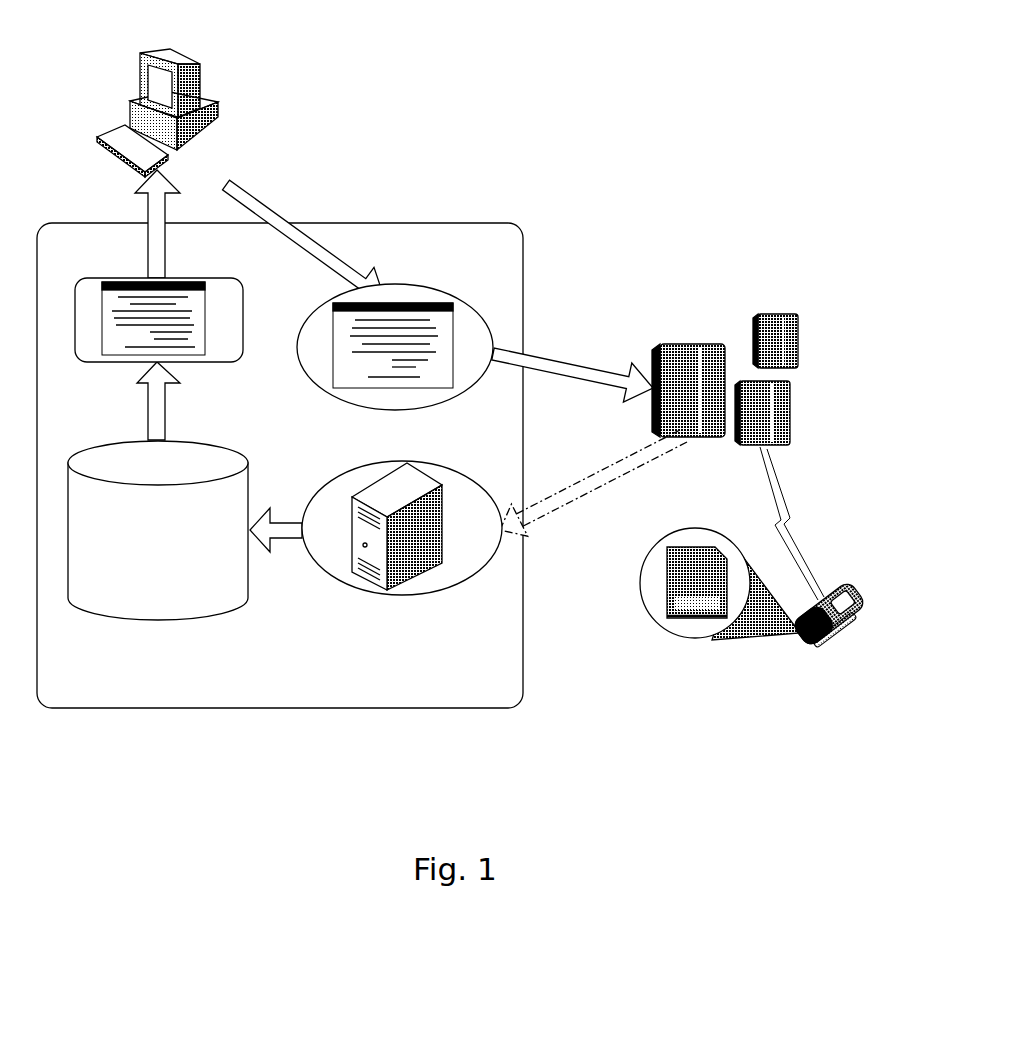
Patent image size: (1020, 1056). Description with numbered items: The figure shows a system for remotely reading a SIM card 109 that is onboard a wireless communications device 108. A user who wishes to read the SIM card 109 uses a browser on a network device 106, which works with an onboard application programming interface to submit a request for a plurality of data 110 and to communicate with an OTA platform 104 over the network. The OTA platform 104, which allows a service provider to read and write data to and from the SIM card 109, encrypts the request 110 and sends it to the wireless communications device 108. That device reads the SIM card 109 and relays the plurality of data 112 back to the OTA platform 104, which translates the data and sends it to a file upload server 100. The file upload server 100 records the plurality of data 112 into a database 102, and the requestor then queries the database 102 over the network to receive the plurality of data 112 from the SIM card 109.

The file upload server 100 is at (402, 551).
The database 102 is at (189, 560).
The OTA platform 104 is at (734, 361).
The network device 106 is at (212, 100).
The wireless communications device 108 is at (771, 646).
The SIM card 109 is at (671, 587).
The request for a plurality of data 110 is at (403, 324).
The plurality of data 112 is at (187, 348).